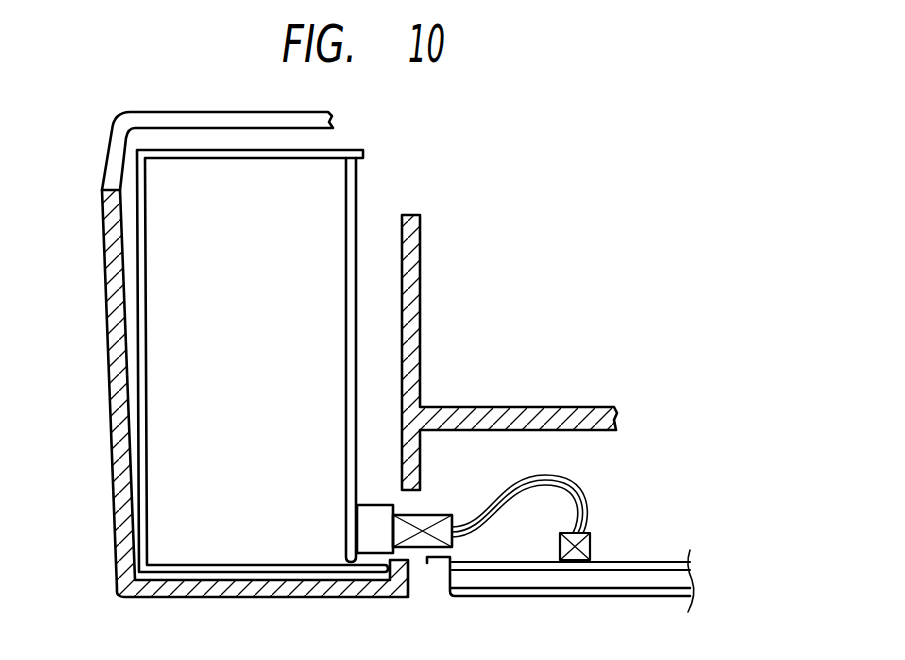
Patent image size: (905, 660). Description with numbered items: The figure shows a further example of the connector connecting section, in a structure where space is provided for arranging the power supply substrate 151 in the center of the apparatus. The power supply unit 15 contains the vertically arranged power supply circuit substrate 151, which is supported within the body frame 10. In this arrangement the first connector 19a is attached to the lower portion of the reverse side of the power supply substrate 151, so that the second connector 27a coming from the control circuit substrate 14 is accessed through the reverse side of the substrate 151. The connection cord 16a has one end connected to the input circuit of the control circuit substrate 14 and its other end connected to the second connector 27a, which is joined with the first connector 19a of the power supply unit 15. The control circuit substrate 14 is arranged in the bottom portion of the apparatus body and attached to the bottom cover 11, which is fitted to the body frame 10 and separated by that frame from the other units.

The body frame 10 is at (592, 408).
The power supply unit 15 is at (158, 330).
The power supply circuit substrate 151 is at (347, 335).
The first connector 19a is at (366, 522).
The second connector 27a is at (440, 514).
The connection cord 16a is at (568, 490).
The control circuit substrate 14 is at (637, 560).
The bottom cover 11 is at (577, 599).